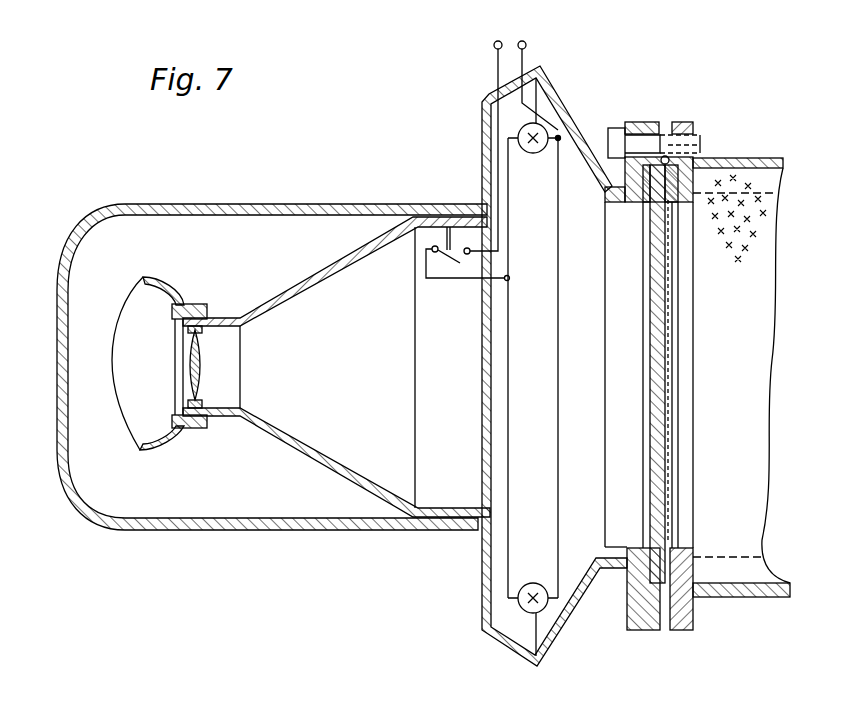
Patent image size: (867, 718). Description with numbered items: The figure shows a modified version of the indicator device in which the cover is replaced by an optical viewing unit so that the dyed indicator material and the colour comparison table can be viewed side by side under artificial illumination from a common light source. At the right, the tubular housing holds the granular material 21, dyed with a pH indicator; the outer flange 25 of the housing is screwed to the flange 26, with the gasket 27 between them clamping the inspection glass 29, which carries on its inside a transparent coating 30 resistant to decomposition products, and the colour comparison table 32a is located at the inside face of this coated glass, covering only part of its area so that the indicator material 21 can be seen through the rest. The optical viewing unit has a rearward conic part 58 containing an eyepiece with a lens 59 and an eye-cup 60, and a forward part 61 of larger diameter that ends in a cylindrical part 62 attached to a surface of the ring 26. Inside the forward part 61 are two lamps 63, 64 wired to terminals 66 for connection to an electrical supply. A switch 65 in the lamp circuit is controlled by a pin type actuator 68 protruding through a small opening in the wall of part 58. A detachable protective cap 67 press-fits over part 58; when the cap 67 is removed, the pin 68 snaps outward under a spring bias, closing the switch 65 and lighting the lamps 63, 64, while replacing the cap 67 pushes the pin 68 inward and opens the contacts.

The granular material 21 is at (743, 207).
The outer flange 25 is at (683, 121).
The flange 26 is at (646, 121).
The gasket 27 is at (677, 188).
The inspection glass 29 is at (658, 222).
The transparent coating 30 is at (668, 277).
The colour comparison table 32a is at (674, 297).
The rearward conic housing part 58 is at (297, 448).
The lens 59 is at (200, 354).
The eye-cup 60 is at (144, 320).
The forward housing part 61 is at (557, 95).
The cylindrical part 62 is at (617, 567).
The lamp 63 is at (532, 153).
The lamp 64 is at (523, 607).
The switch 65 is at (468, 264).
The terminals 66 is at (522, 41).
The protective detachable cap 67 is at (297, 522).
The pin type actuator 68 is at (452, 238).